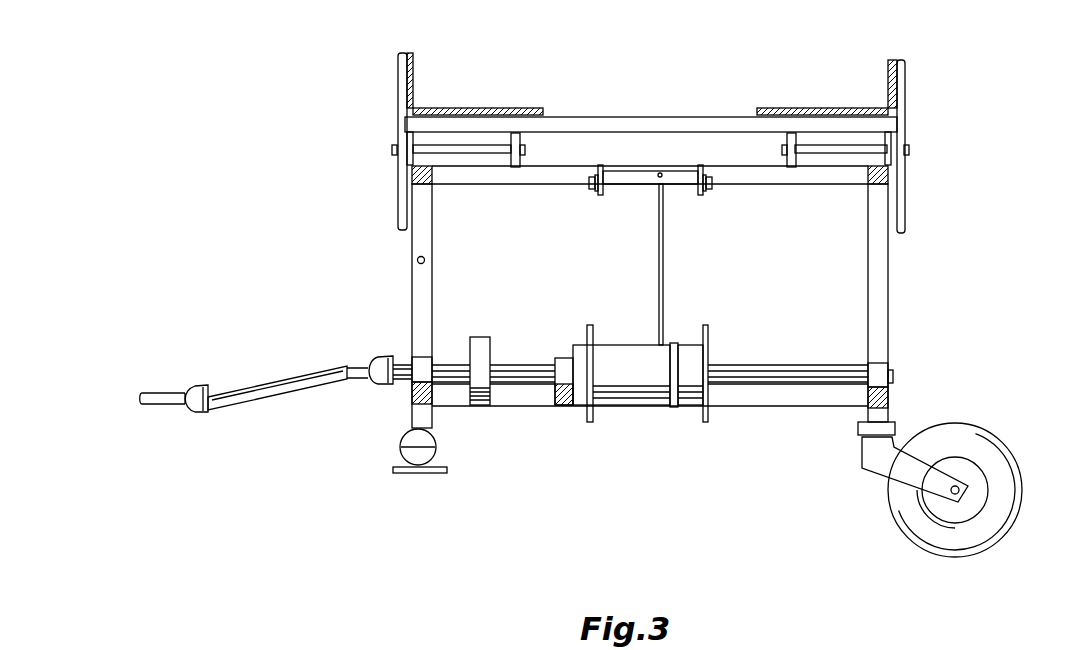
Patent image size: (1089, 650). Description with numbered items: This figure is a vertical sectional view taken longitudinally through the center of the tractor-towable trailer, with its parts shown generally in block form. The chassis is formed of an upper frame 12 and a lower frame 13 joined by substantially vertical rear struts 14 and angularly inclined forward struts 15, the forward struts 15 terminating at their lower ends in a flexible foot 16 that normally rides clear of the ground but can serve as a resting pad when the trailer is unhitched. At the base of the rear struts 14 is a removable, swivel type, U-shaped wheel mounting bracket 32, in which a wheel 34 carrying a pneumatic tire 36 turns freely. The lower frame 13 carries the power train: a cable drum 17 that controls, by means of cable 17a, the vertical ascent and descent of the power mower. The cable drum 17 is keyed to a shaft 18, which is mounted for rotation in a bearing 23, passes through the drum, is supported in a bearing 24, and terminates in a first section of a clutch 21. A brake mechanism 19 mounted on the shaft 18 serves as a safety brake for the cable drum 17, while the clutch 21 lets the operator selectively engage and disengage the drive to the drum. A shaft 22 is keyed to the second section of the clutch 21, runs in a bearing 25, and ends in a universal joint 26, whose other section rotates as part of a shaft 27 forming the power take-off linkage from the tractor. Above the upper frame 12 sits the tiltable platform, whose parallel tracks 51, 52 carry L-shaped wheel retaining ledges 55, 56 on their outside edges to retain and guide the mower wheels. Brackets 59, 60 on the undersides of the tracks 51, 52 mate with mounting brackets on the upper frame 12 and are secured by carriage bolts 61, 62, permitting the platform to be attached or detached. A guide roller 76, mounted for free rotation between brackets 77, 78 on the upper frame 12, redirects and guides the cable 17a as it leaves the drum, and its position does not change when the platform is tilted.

The upper frame 12 is at (760, 184).
The lower frame 13 is at (768, 406).
The rear struts 14 is at (888, 282).
The forward struts 15 is at (432, 240).
The flexible foot 16 is at (418, 474).
The cable drum 17 is at (625, 345).
The cable 17a is at (663, 270).
The shaft 18 is at (758, 366).
The brake mechanism 19 is at (588, 325).
The clutch 21 is at (486, 337).
The shaft 22 is at (443, 365).
The bearing 23 is at (889, 366).
The bearing 24 is at (562, 358).
The bearing 25 is at (416, 357).
The universal joint 26 is at (382, 385).
The shaft 27 is at (248, 382).
The wheel mounting bracket 32 is at (897, 437).
The wheel 34 is at (985, 464).
The pneumatic tire 36 is at (1023, 490).
The track 51 is at (460, 108).
The track 52 is at (782, 108).
The L-shaped wheel retaining ledge 55 is at (404, 54).
The L-shaped wheel retaining ledge 56 is at (900, 60).
The bracket 59 is at (521, 140).
The bracket 60 is at (786, 140).
The carriage bolt 61 is at (468, 153).
The carriage bolt 62 is at (826, 153).
The guide roller 76 is at (628, 184).
The bracket 77 is at (710, 185).
The bracket 78 is at (594, 185).